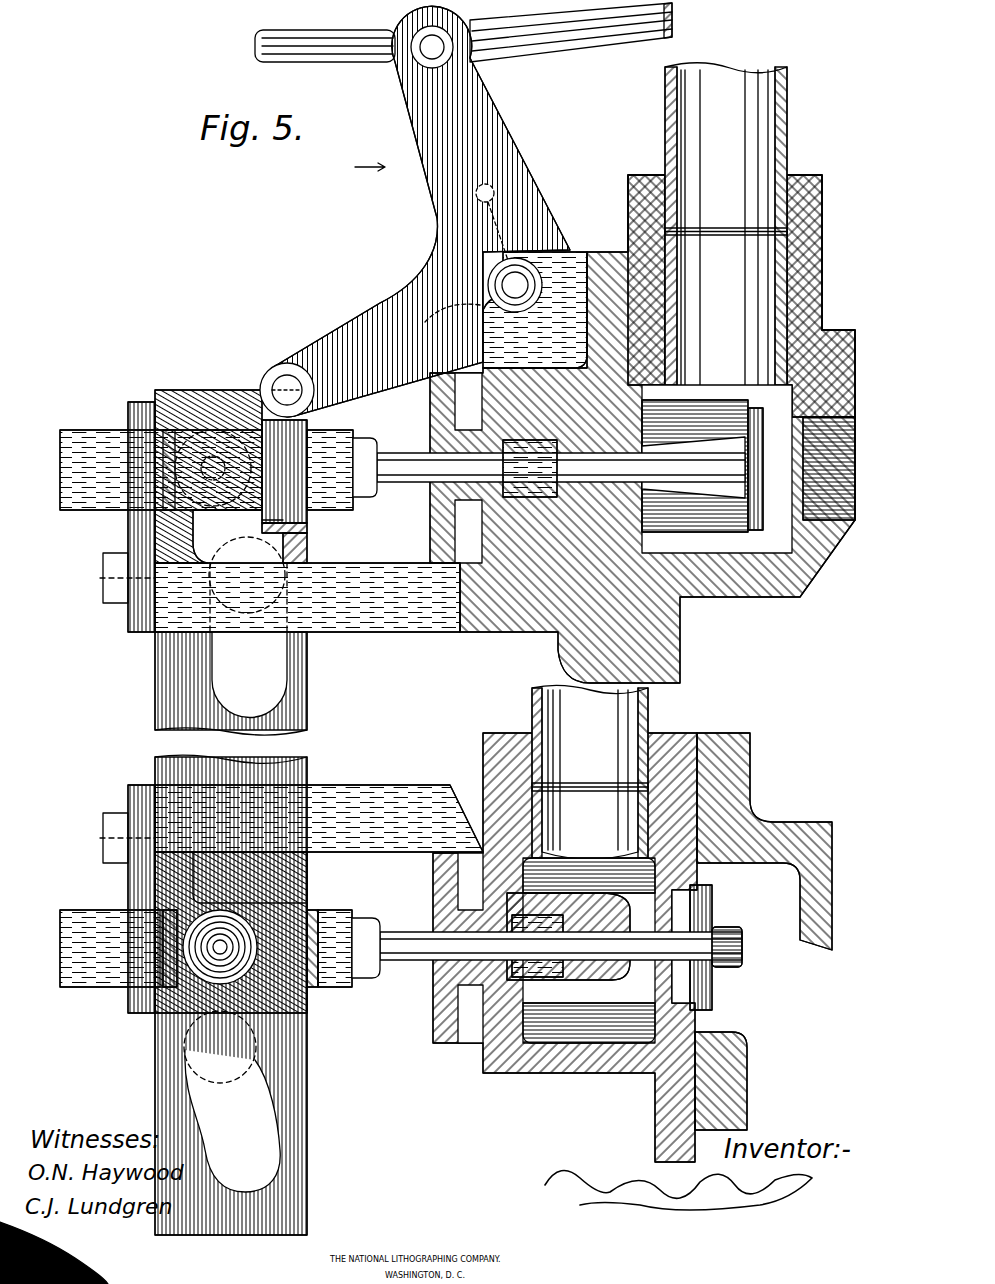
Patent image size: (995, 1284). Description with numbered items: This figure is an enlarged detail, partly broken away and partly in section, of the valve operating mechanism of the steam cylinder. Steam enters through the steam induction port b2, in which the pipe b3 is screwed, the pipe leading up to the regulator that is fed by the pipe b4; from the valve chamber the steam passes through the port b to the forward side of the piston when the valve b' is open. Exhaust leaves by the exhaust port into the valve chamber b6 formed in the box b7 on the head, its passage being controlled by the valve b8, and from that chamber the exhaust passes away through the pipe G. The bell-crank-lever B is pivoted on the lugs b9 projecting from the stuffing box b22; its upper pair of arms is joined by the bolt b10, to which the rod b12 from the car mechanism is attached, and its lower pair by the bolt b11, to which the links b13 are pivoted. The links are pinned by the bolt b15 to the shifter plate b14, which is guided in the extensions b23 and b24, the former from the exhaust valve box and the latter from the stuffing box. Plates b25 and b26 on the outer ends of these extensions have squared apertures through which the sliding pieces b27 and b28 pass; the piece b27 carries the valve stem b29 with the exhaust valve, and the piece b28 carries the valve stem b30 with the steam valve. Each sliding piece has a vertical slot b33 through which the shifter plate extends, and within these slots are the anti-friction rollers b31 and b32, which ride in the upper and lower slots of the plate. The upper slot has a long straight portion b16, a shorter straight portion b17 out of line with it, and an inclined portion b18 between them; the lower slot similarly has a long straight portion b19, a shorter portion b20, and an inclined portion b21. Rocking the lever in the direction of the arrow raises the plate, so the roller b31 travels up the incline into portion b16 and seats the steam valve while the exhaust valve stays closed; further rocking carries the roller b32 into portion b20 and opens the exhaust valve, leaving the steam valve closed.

The bell-crank-lever B is at (415, 211).
The pipe G is at (590, 772).
The port b is at (829, 468).
The valve b' is at (758, 469).
The steam induction port b2 is at (741, 296).
The pipe b3 is at (726, 224).
The pipe b4 is at (231, 995).
The valve chamber b6 is at (581, 950).
The box b7 is at (570, 1073).
The valve b8 is at (706, 918).
The lugs b9 is at (535, 322).
The bolt b10 is at (412, 68).
The bolt b11 is at (273, 377).
The rod b12 is at (310, 55).
The links b13 is at (284, 491).
The shifter plate b14 is at (180, 398).
The bolt b15 is at (161, 470).
The lower portion of slot b16 is at (249, 675).
The upper portion of slot b17 is at (231, 683).
The angularly extending portion b18 is at (230, 521).
The upper straight portion b19 is at (231, 934).
The lower straight portion b20 is at (232, 1121).
The angularly extending portion b21 is at (220, 1059).
The stuffing box b22 is at (642, 429).
The extension b23 is at (319, 818).
The extension b24 is at (280, 592).
The plate b25 is at (130, 790).
The plate b26 is at (135, 408).
The sliding piece b27 is at (368, 902).
The sliding piece b28 is at (342, 470).
The valve stem b29 is at (561, 947).
The valve stem b30 is at (562, 466).
The anti-friction roller b31 is at (249, 525).
The anti-friction roller b32 is at (225, 978).
The slots b33 is at (125, 505).